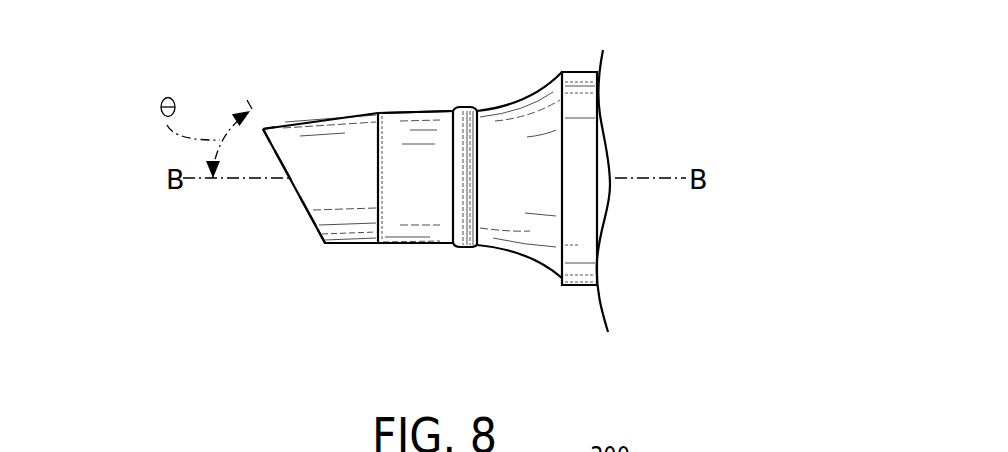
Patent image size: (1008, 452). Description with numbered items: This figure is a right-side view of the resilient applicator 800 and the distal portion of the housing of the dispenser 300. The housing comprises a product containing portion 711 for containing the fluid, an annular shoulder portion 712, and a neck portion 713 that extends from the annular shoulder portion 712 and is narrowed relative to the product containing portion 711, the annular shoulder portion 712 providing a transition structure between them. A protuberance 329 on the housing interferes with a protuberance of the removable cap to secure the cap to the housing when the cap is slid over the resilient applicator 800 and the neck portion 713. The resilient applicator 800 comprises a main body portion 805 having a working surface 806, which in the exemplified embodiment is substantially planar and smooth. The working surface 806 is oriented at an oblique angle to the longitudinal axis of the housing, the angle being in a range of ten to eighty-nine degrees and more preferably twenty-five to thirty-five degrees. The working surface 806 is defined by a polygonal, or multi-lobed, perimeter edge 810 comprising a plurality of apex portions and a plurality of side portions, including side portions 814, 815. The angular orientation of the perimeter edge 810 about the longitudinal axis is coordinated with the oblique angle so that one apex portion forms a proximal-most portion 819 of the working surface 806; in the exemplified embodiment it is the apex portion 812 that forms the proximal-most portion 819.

The dispenser 300 is at (648, 54).
The protuberance 329 is at (468, 250).
The product containing portion 711 is at (585, 155).
The annular shoulder portion 712 is at (543, 97).
The neck portion 713 is at (428, 117).
The resilient applicator 800 is at (352, 98).
The main body portion 805 is at (380, 228).
The working surface 806 is at (284, 198).
The perimeter edge 810 is at (310, 218).
The apex portion 812 is at (307, 283).
The side portion 814 is at (261, 128).
The side portion 815 is at (283, 163).
The proximal-most portion 819 is at (323, 246).